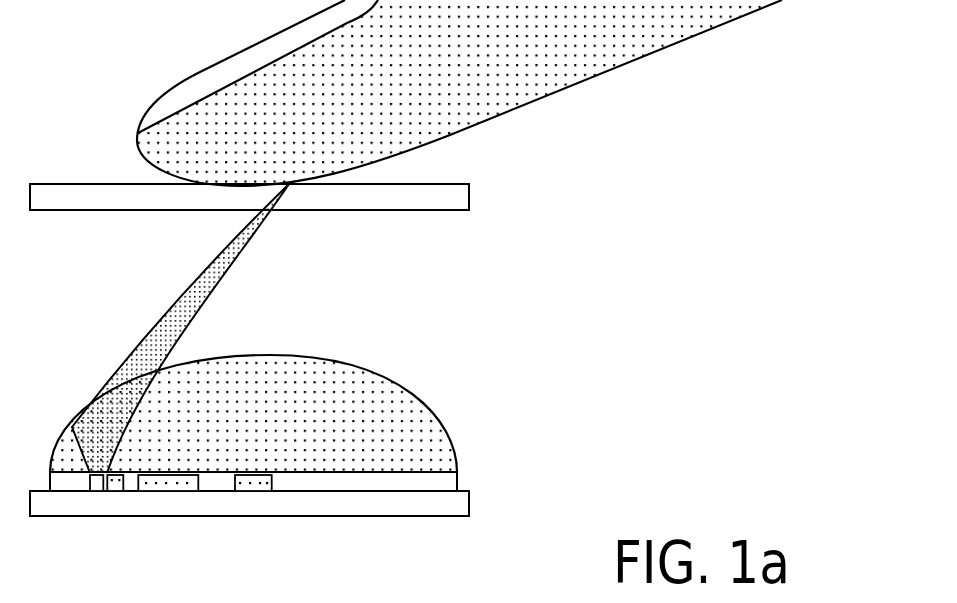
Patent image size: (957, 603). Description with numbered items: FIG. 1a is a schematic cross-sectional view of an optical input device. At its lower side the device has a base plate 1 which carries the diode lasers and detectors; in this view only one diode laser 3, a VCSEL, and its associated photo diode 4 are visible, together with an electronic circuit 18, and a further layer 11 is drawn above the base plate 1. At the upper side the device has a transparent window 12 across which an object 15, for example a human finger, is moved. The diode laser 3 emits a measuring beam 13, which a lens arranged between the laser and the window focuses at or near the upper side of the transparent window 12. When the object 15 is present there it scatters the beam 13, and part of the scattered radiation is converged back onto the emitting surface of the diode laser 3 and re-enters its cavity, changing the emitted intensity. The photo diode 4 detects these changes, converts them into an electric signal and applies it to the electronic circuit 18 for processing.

The object 15 is at (588, 58).
The transparent window 12 is at (453, 198).
The measuring beam 13 is at (183, 303).
The intermediate layer 11 is at (445, 482).
The base plate 1 is at (460, 501).
The diode laser 3 is at (98, 481).
The photo diode 4 is at (115, 481).
The electronic circuit 18 is at (175, 482).